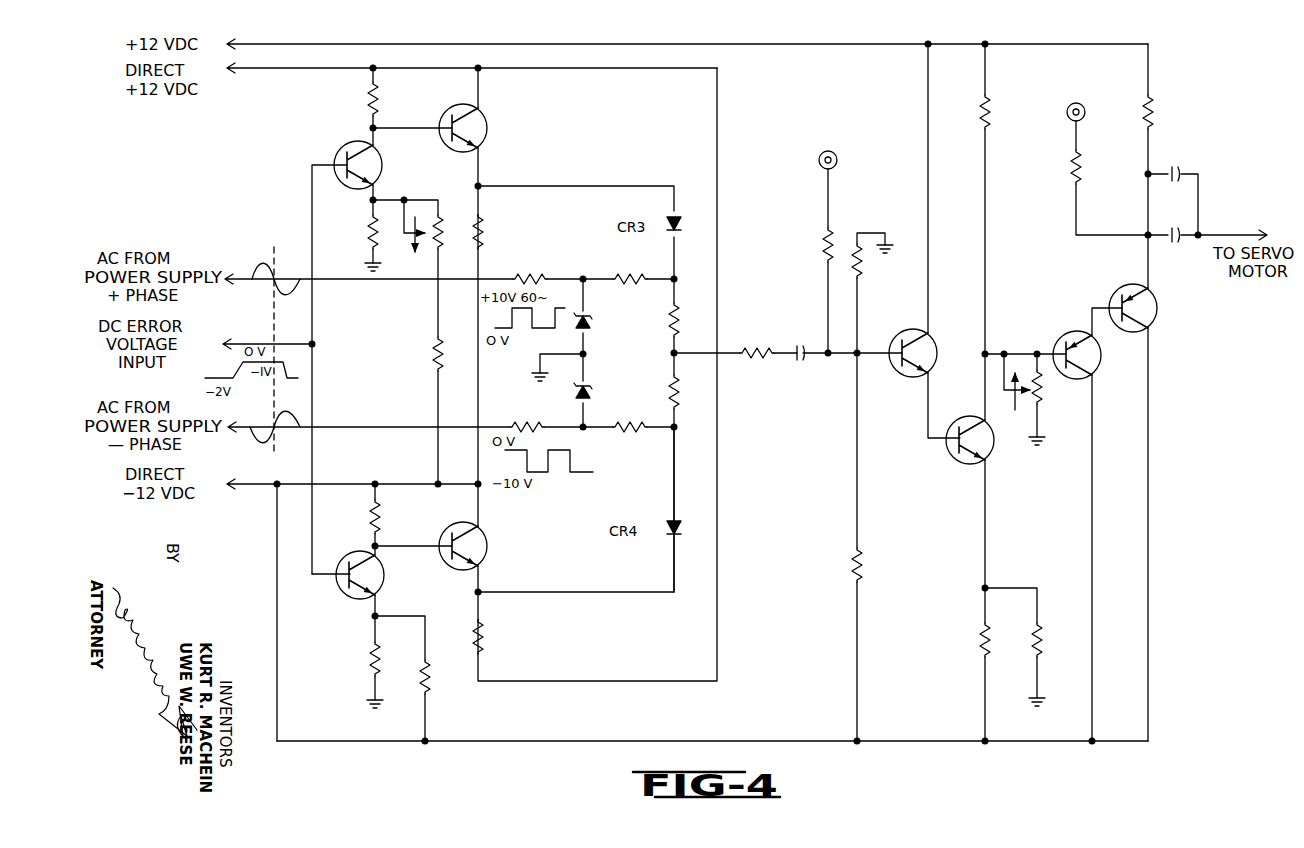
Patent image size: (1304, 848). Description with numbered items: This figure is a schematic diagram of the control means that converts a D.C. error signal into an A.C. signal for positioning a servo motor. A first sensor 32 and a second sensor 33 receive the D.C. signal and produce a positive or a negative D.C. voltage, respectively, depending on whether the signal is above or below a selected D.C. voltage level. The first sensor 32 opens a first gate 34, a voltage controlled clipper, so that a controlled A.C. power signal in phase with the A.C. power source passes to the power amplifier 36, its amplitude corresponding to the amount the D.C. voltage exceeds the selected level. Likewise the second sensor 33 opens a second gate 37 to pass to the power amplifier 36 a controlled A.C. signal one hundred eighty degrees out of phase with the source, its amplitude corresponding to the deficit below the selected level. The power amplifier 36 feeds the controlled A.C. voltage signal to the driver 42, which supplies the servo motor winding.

The first sensor 32 is at (316, 104).
The second sensor 33 is at (446, 652).
The first gate 34 is at (727, 268).
The power amplifier 36 is at (998, 300).
The second gate 37 is at (735, 429).
The driver 42 is at (1172, 346).